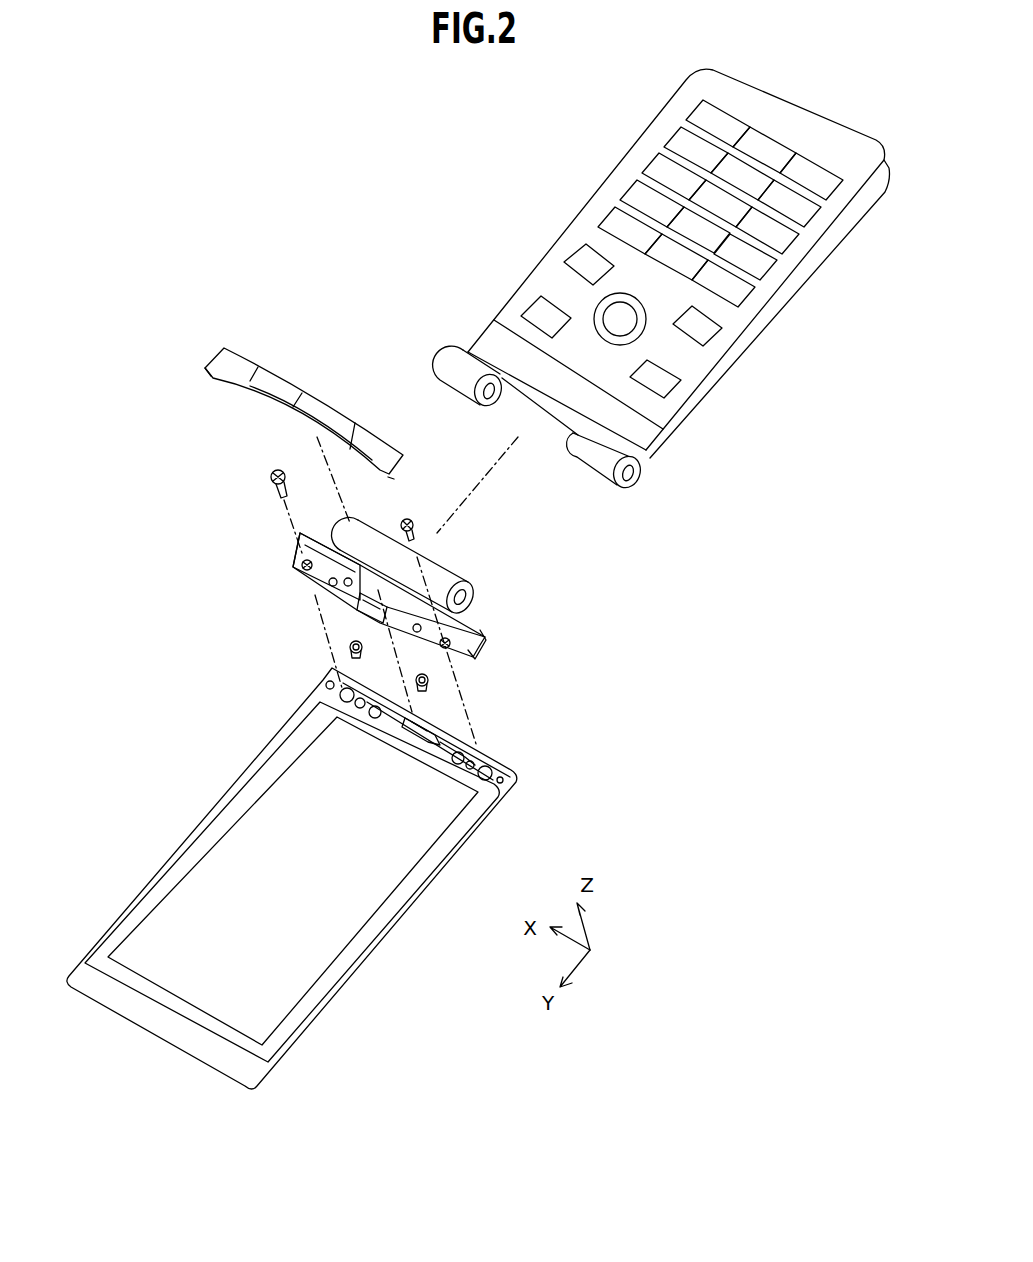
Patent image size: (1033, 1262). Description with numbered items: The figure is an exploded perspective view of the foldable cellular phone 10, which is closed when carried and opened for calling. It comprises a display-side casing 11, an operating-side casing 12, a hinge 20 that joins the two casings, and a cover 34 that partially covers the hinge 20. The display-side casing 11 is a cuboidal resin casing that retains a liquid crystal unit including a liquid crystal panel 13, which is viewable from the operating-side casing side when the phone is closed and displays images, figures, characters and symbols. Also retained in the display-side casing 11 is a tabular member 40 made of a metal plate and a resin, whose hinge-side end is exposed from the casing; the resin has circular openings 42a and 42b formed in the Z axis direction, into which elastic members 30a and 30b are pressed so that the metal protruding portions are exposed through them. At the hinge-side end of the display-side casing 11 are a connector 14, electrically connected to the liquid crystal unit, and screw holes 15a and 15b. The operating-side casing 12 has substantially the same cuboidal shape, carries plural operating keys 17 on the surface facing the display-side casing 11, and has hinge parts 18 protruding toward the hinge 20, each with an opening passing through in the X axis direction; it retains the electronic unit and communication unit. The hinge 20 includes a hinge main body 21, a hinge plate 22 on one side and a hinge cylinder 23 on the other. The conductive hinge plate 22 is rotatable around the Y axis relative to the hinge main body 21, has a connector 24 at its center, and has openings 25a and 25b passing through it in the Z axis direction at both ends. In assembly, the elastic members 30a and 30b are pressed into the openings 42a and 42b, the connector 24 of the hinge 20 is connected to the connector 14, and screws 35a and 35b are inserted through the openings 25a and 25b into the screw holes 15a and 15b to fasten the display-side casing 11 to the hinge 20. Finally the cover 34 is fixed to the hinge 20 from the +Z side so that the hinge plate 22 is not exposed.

The cellular phone 10 is at (232, 135).
The display-side casing 11 is at (318, 878).
The operating-side casing 12 is at (629, 280).
The liquid crystal panel 13 is at (293, 881).
The connector 14 is at (448, 712).
The screw hole 15a is at (524, 754).
The screw hole 15b is at (322, 727).
The operating keys 17 is at (682, 248).
The hinge parts 18 is at (545, 407).
The hinge 20 is at (347, 578).
The hinge main body 21 is at (437, 596).
The hinge plate 22 is at (289, 578).
The hinge cylinder 23 is at (433, 568).
The connector 24 is at (327, 622).
The opening 25a is at (493, 614).
The opening 25b is at (261, 574).
The elastic member 30a is at (500, 673).
The elastic member 30b is at (276, 661).
The cover 34 is at (284, 389).
The screw 35a is at (435, 499).
The screw 35b is at (249, 456).
The tabular member 40 is at (485, 720).
The opening 42a is at (494, 739).
The opening 42b is at (372, 742).